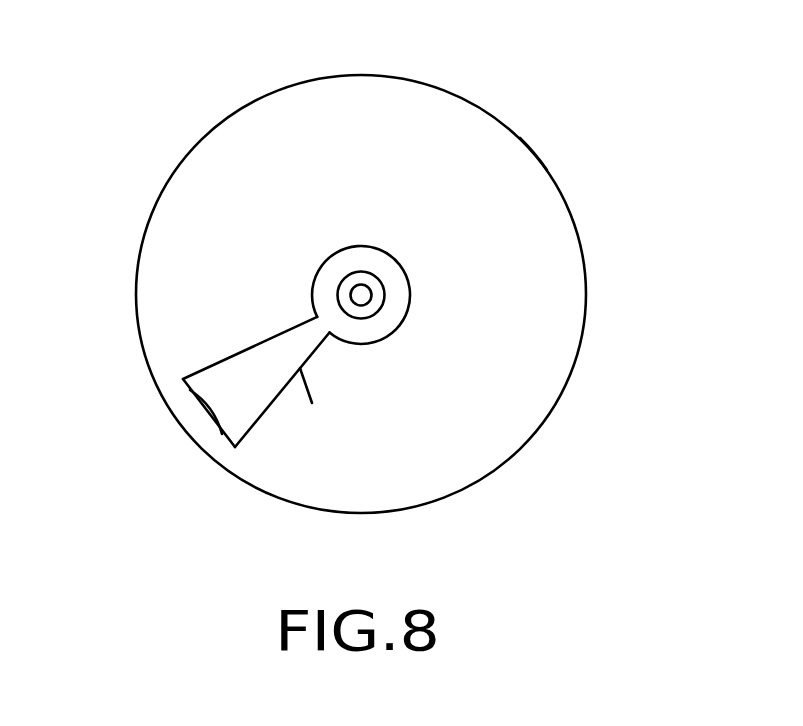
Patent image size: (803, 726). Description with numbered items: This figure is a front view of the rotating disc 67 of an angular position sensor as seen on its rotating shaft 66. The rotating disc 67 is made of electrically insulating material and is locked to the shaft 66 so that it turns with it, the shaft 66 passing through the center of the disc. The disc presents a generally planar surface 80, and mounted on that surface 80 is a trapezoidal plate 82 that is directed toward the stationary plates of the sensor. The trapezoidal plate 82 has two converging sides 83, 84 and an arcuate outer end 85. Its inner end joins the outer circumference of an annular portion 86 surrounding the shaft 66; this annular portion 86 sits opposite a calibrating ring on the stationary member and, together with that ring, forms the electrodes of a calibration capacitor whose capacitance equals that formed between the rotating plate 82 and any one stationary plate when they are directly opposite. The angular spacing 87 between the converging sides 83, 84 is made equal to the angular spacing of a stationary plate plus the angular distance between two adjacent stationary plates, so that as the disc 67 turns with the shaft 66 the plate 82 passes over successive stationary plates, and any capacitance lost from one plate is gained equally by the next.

The planar surface 80 is at (267, 135).
The rotating disc 67 is at (541, 156).
The annular portion 86 is at (397, 312).
The rotating shaft 66 is at (372, 294).
The converging side 83 is at (255, 346).
The trapezoidal plate 82 is at (186, 401).
The arcuate outer end 85 is at (221, 433).
The converging side 84 is at (312, 403).
The angular spacing 87 is at (211, 371).